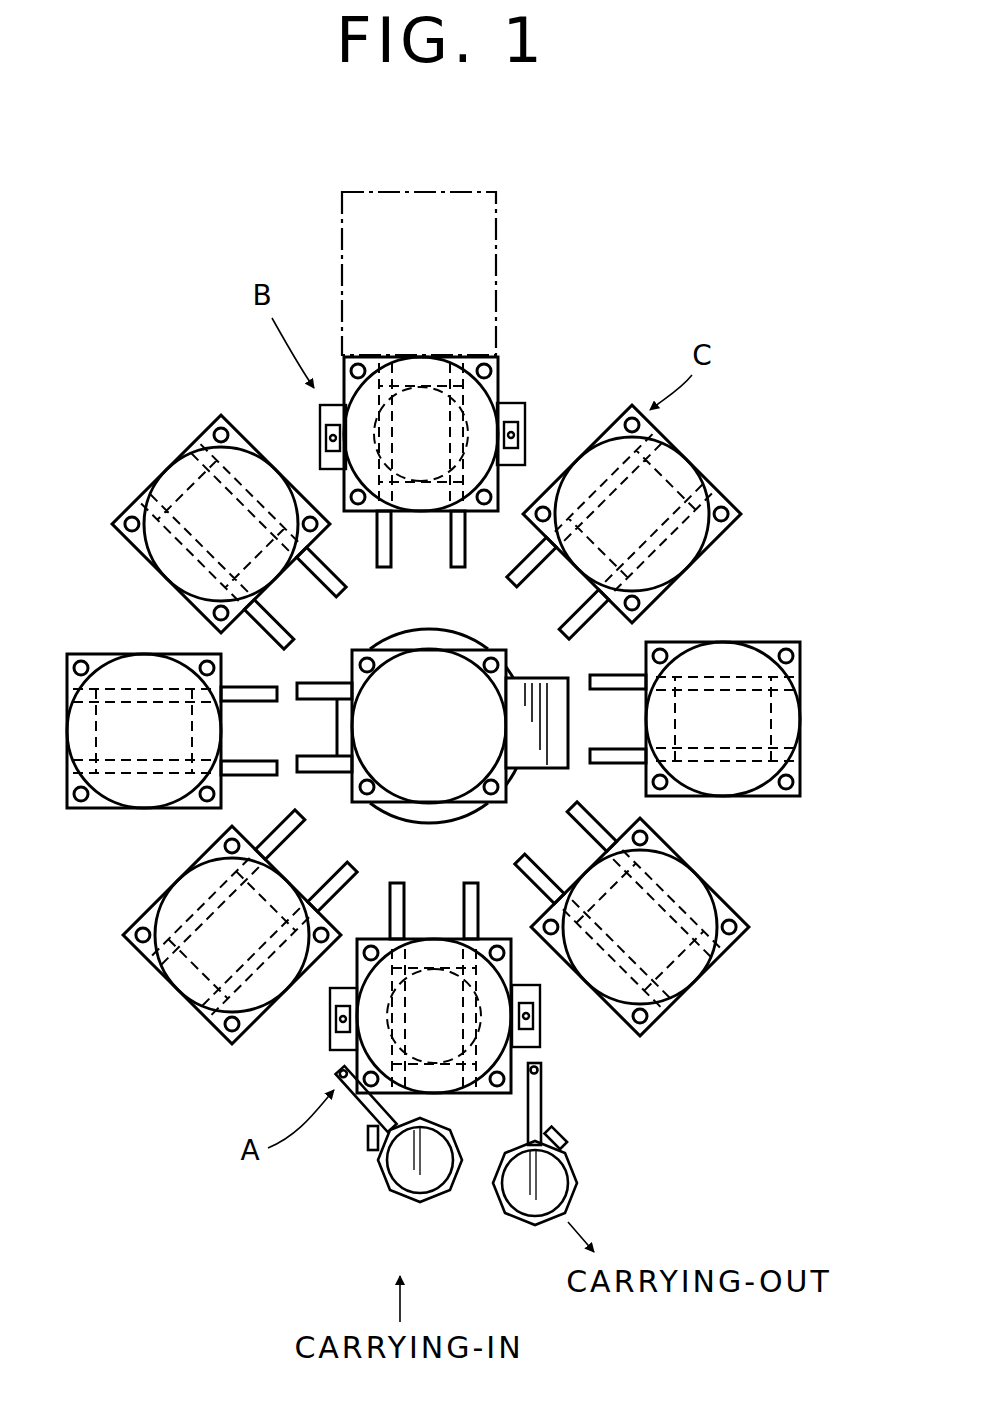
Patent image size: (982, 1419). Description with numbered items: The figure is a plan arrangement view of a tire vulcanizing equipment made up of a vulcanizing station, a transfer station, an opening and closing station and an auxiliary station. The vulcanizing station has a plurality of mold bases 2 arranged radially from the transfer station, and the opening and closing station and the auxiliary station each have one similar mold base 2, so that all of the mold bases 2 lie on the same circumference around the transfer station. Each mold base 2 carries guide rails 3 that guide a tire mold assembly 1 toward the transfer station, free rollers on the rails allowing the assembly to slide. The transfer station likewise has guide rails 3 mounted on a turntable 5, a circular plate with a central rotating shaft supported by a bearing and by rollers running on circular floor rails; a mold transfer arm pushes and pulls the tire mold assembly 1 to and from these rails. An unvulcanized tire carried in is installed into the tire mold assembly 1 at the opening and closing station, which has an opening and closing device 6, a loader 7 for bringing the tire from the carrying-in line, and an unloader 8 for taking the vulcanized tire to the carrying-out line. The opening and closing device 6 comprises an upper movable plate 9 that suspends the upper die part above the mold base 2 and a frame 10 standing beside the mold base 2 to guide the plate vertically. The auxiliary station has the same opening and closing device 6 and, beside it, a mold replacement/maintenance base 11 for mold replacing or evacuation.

The tire mold assembly 1 is at (672, 462).
The mold base 2 is at (440, 385).
The guide rails 3 is at (325, 683).
The turntable 5 is at (440, 812).
The opening and closing device 6 is at (514, 391).
The loader 7 is at (400, 1180).
The unloader 8 is at (562, 1185).
The upper movable plate 9 is at (468, 960).
The frame 10 is at (540, 1055).
The mold replacement/maintenance base 11 is at (436, 298).